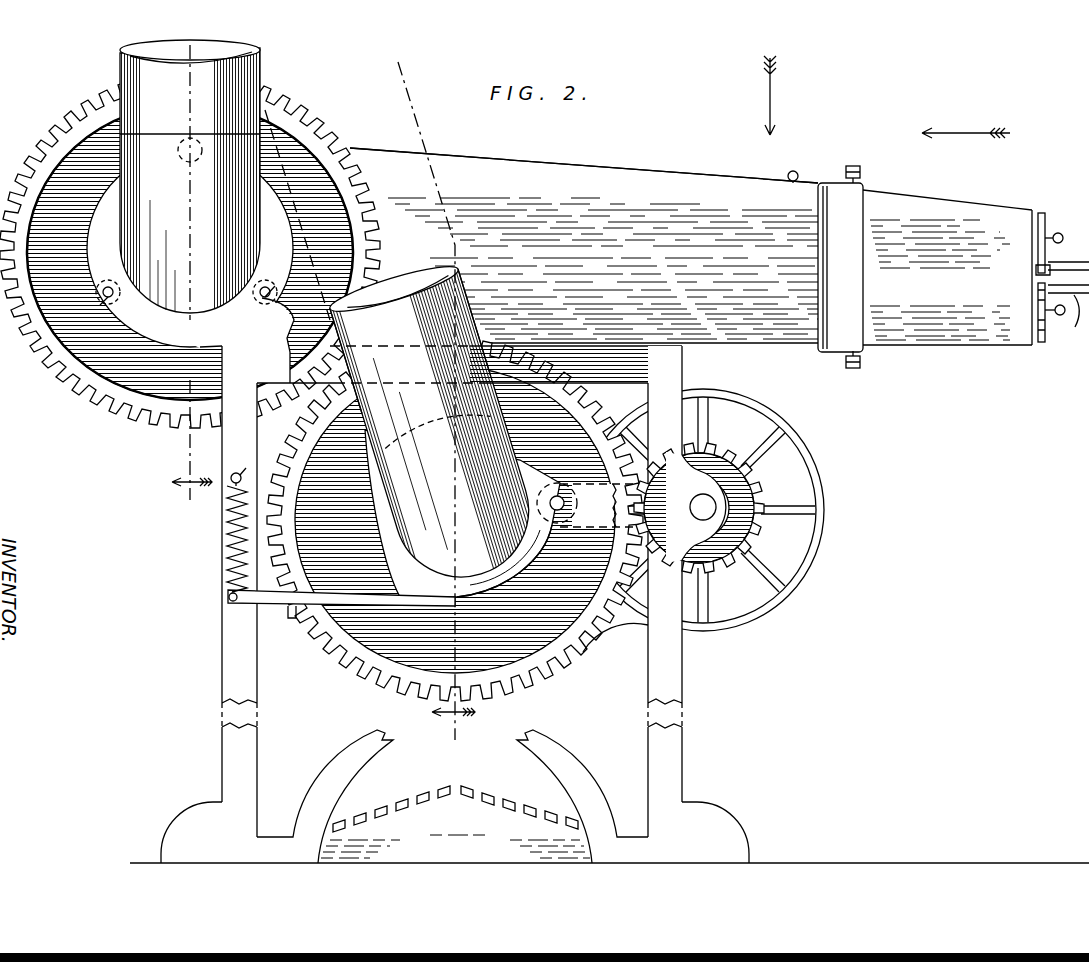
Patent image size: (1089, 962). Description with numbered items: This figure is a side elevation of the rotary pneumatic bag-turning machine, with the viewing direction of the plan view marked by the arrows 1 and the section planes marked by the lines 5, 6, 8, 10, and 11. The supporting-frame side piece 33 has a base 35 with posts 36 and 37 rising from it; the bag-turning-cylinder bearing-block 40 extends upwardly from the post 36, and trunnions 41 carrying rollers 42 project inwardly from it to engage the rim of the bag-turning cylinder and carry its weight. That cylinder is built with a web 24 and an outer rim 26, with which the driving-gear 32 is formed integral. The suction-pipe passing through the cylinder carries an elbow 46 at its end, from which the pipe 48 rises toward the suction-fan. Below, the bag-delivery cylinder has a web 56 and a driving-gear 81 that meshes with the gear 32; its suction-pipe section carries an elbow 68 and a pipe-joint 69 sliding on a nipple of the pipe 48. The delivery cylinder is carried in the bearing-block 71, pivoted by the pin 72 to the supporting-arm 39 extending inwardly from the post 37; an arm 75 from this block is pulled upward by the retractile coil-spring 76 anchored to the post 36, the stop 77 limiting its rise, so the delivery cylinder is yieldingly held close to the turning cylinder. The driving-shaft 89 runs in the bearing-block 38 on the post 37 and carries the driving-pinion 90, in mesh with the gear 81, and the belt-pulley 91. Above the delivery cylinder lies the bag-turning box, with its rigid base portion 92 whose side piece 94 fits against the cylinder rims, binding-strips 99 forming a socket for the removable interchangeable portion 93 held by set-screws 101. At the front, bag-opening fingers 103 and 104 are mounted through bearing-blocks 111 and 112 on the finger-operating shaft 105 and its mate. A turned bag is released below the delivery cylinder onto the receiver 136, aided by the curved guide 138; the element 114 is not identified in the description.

The arrows 1 is at (778, 95).
The line 5 5 is at (195, 50).
The line 6 6 is at (436, 411).
The line 8 8 is at (966, 123).
The line 10 10 is at (1066, 317).
The line 11 11 is at (122, 292).
The web 24 is at (190, 264).
The outer rim 26 is at (100, 350).
The bag-turning-cylinder driving-gear 32 is at (118, 424).
The side piece 33 is at (469, 364).
The base 35 is at (200, 815).
The post 36 is at (222, 668).
The post 37 is at (682, 668).
The driving-shaft bearing-block 38 is at (721, 508).
The delivery-cylinder supporting-arm 39 is at (588, 505).
The bag-turning-cylinder bearing-block 40 is at (217, 339).
The trunnion 41 is at (106, 285).
The roller 42 is at (115, 296).
The elbow 46 is at (190, 180).
The pipe 48 is at (190, 101).
The web 56 is at (455, 522).
The elbow 68 is at (437, 427).
The pipe-joint 69 is at (409, 336).
The bearing-block 71 is at (462, 513).
The pin 72 is at (548, 515).
The arm 75 is at (291, 620).
The retractile coil-spring 76 is at (226, 553).
The stop 77 is at (230, 602).
The bag-delivery-cylinder driving-gear 81 is at (352, 680).
The driving-shaft 89 is at (700, 514).
The driving-pinion 90 is at (760, 500).
The belt-pulley 91 is at (828, 517).
The base portion 92 is at (642, 178).
The removable interchangeable portion 93 is at (691, 263).
The side piece 94 is at (699, 269).
The binding-strip 99 is at (832, 268).
The set-screw 101 is at (862, 180).
The bag-opening finger 103 is at (1062, 234).
The bag-opening finger 104 is at (1045, 310).
The finger-operating shaft 105 is at (1068, 278).
The bearing-block 111 is at (1054, 266).
The bearing-block 112 is at (1038, 285).
The pin 114 is at (795, 172).
The receiver 136 is at (455, 822).
The guide 138 is at (618, 634).